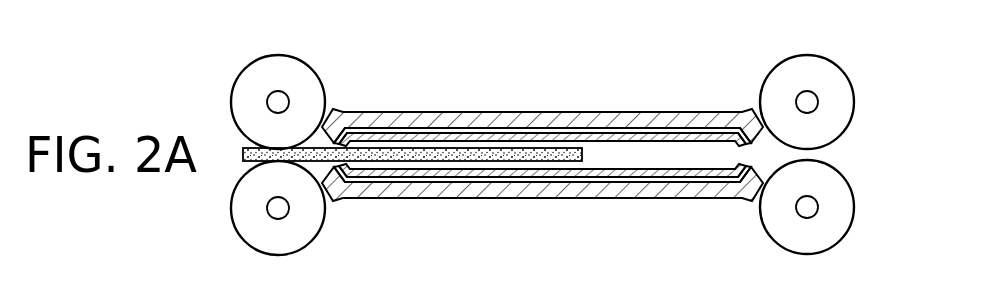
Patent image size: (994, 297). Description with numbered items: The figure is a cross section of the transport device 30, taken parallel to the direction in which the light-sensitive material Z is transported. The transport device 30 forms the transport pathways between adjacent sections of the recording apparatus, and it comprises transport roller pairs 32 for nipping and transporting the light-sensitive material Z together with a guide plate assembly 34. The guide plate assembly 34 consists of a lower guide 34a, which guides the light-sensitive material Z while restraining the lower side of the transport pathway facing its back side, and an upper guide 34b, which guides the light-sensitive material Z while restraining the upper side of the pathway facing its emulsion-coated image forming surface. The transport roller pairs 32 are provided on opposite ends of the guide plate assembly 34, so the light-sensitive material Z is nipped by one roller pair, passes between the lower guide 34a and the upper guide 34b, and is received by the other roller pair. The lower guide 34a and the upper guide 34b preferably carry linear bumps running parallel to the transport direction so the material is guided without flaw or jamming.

The transport device 30 is at (560, 133).
The transport roller pairs 32 is at (305, 82).
The guide plate assembly 34 is at (542, 142).
The lower guide 34a is at (542, 204).
The upper guide 34b is at (542, 103).
The light-sensitive material Z is at (460, 163).